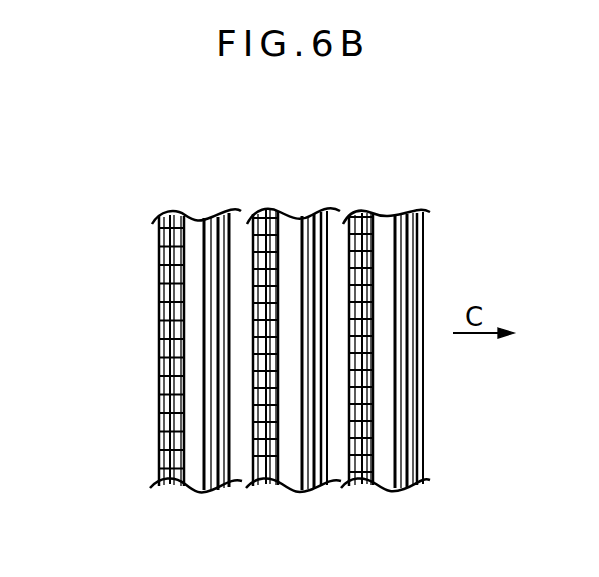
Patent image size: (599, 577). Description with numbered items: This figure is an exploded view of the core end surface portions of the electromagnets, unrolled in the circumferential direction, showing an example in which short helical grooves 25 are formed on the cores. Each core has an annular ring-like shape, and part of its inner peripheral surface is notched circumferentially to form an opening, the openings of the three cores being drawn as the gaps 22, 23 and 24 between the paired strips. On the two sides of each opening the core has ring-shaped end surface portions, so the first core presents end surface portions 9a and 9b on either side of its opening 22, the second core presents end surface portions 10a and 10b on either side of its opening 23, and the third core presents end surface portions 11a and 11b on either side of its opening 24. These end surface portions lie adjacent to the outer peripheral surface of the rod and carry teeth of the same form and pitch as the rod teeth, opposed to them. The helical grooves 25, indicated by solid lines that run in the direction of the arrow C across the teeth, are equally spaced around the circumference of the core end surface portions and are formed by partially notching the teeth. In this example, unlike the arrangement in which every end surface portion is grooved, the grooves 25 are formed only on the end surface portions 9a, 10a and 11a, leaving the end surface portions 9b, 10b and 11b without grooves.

The end surface portion 9a is at (178, 212).
The end surface portion 9b is at (220, 218).
The end surface portion 10a is at (274, 212).
The end surface portion 10b is at (322, 213).
The end surface portion 11a is at (366, 212).
The end surface portion 11b is at (414, 211).
The opening 22 is at (203, 346).
The opening 23 is at (309, 346).
The opening 24 is at (410, 346).
The helical grooves 25 is at (350, 282).